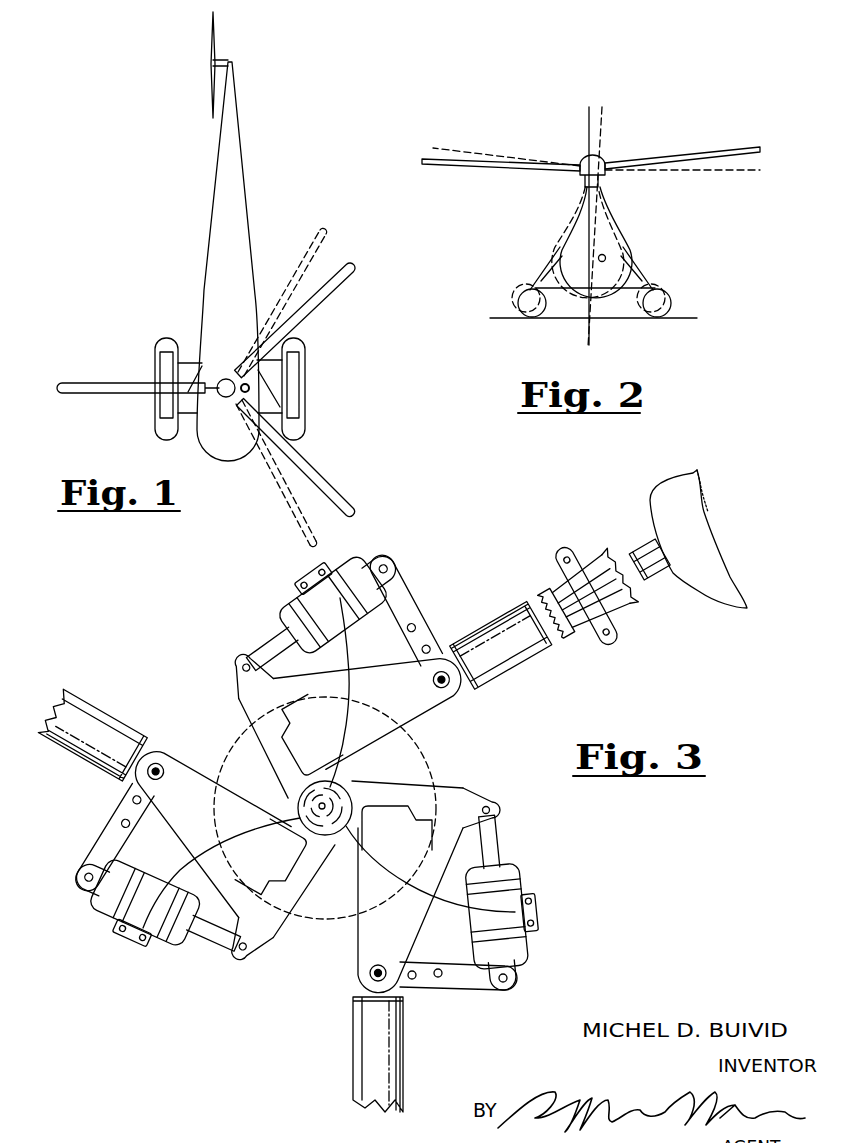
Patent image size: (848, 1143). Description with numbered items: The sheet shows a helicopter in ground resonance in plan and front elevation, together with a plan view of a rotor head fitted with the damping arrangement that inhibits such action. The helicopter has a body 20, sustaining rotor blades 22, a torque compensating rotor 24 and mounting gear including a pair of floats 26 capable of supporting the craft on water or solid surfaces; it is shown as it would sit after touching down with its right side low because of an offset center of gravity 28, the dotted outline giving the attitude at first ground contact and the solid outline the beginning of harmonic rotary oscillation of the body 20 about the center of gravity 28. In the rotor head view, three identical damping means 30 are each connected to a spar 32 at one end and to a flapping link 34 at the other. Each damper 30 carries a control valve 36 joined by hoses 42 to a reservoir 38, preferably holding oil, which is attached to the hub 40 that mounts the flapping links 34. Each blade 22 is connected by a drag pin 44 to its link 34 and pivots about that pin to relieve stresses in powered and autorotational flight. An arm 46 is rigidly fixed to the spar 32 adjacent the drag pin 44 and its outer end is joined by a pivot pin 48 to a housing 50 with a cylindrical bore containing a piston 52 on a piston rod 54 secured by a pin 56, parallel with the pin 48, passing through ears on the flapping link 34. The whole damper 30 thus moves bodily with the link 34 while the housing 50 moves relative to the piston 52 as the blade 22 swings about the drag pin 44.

In FIG. 1, the body 20 is at (235, 155).
In FIG. 2, the body 20 is at (607, 243).
In FIG. 1, the sustaining rotor blades 22 is at (108, 384).
In FIG. 2, the sustaining rotor blades 22 is at (503, 170).
In FIG. 3, the sustaining rotor blades 22 is at (688, 573).
In FIG. 1, the torque compensating rotor 24 is at (214, 63).
In FIG. 1, the floats 26 is at (300, 428).
In FIG. 2, the floats 26 is at (665, 288).
In FIG. 1, the center of gravity 28 is at (249, 388).
In FIG. 2, the center of gravity 28 is at (606, 258).
In FIG. 3, the damping means 30 is at (320, 757).
In FIG. 3, the spars 32 is at (358, 1040).
In FIG. 3, the flapping links 34 is at (368, 946).
In FIG. 3, the control valve 36 is at (316, 582).
In FIG. 3, the reservoir 38 is at (343, 798).
In FIG. 3, the hub 40 is at (400, 757).
In FIG. 3, the hoses 42 is at (481, 916).
In FIG. 3, the drag pin 44 is at (371, 975).
In FIG. 3, the arm 46 is at (407, 607).
In FIG. 3, the pivot pin 48 is at (388, 566).
In FIG. 3, the housing 50 is at (350, 577).
In FIG. 3, the piston 52 is at (319, 756).
In FIG. 3, the piston rod 54 is at (281, 640).
In FIG. 3, the pin 56 is at (247, 664).